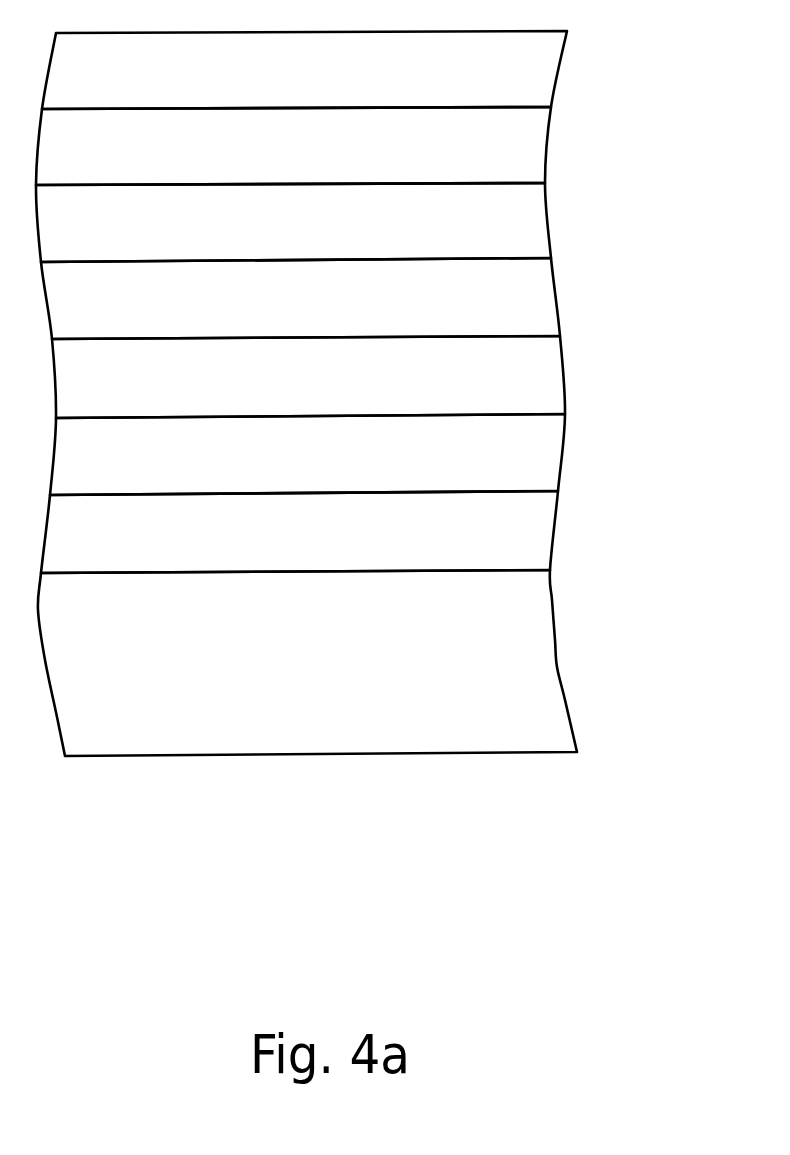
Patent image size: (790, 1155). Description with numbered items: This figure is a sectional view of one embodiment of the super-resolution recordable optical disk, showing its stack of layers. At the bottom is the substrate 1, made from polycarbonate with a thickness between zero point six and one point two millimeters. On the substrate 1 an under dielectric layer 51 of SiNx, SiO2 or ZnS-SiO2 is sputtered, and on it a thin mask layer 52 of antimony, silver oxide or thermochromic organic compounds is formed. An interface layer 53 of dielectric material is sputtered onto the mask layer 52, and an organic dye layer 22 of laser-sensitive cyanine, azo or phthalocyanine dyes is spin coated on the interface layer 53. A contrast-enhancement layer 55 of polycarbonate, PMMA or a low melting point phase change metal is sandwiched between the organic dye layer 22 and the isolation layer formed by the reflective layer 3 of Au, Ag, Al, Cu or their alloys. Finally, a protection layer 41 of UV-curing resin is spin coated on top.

The protection layer 41 is at (533, 75).
The reflective layer 3 is at (535, 160).
The contrast-enhancement layer 55 is at (535, 235).
The organic dye layer 22 is at (537, 315).
The interface layer 53 is at (537, 393).
The mask layer 52 is at (537, 463).
The under dielectric layer 51 is at (538, 538).
The substrate 1 is at (540, 680).